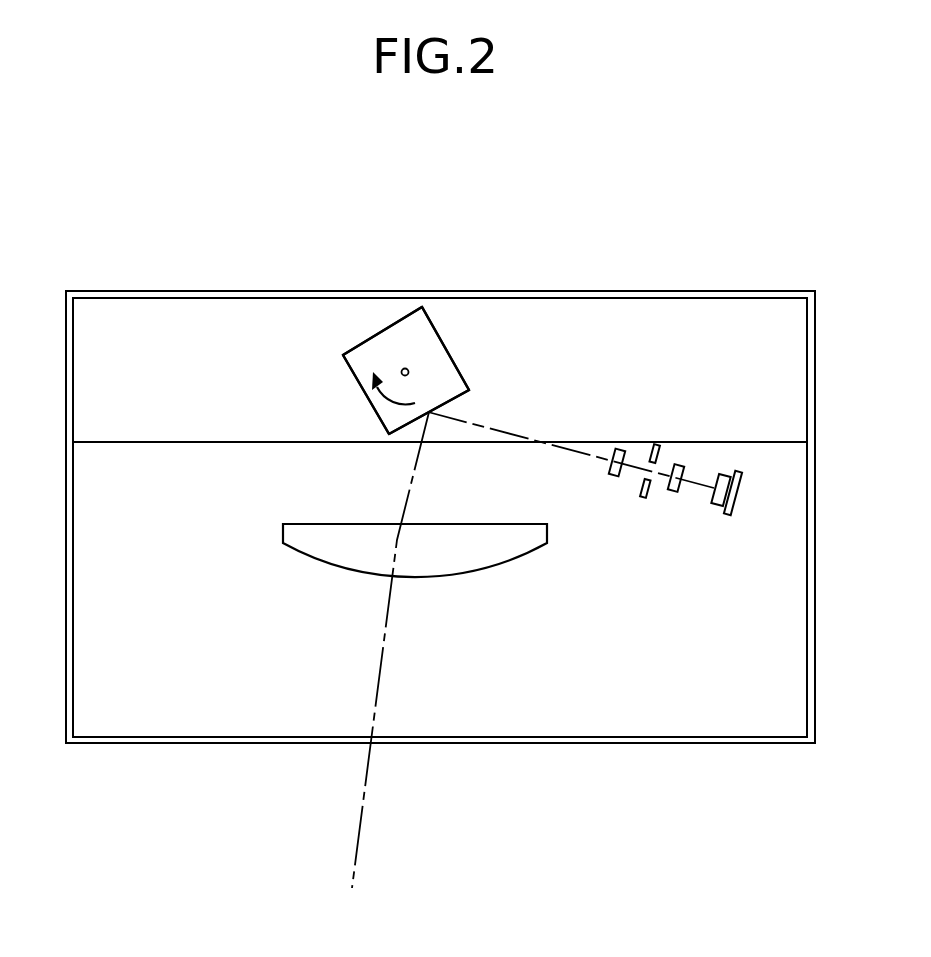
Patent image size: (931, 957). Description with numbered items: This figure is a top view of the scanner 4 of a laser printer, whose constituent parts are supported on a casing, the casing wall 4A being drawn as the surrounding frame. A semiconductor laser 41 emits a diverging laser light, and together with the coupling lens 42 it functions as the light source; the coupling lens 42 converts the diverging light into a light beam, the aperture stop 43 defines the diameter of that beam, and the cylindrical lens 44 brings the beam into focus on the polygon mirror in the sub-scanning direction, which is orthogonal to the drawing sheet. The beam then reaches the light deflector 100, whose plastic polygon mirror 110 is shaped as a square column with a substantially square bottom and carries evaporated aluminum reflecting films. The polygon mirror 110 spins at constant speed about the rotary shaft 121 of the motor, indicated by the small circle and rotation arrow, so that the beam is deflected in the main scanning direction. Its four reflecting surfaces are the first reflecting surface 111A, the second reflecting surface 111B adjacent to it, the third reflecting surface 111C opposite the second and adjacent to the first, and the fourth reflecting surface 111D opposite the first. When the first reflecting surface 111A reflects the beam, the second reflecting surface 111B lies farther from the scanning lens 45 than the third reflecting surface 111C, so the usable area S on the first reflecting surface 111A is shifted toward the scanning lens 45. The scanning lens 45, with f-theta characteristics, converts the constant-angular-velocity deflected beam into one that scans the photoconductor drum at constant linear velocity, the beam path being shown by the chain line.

The scanner 4 is at (180, 254).
The housing 4A is at (308, 292).
The light deflector 100 is at (391, 310).
The polygon mirror 110 is at (375, 328).
The first reflecting surface 111A is at (457, 400).
The second reflecting surface 111B is at (458, 360).
The third reflecting surface 111C is at (366, 396).
The fourth reflecting surface 111D is at (402, 318).
The rotary shaft 121 is at (402, 369).
The usable area S is at (403, 433).
The semiconductor laser 41 is at (731, 476).
The coupling lens 42 is at (684, 466).
The aperture stop 43 is at (655, 445).
The cylindrical lens 44 is at (620, 450).
The scanning lens 45 is at (330, 523).